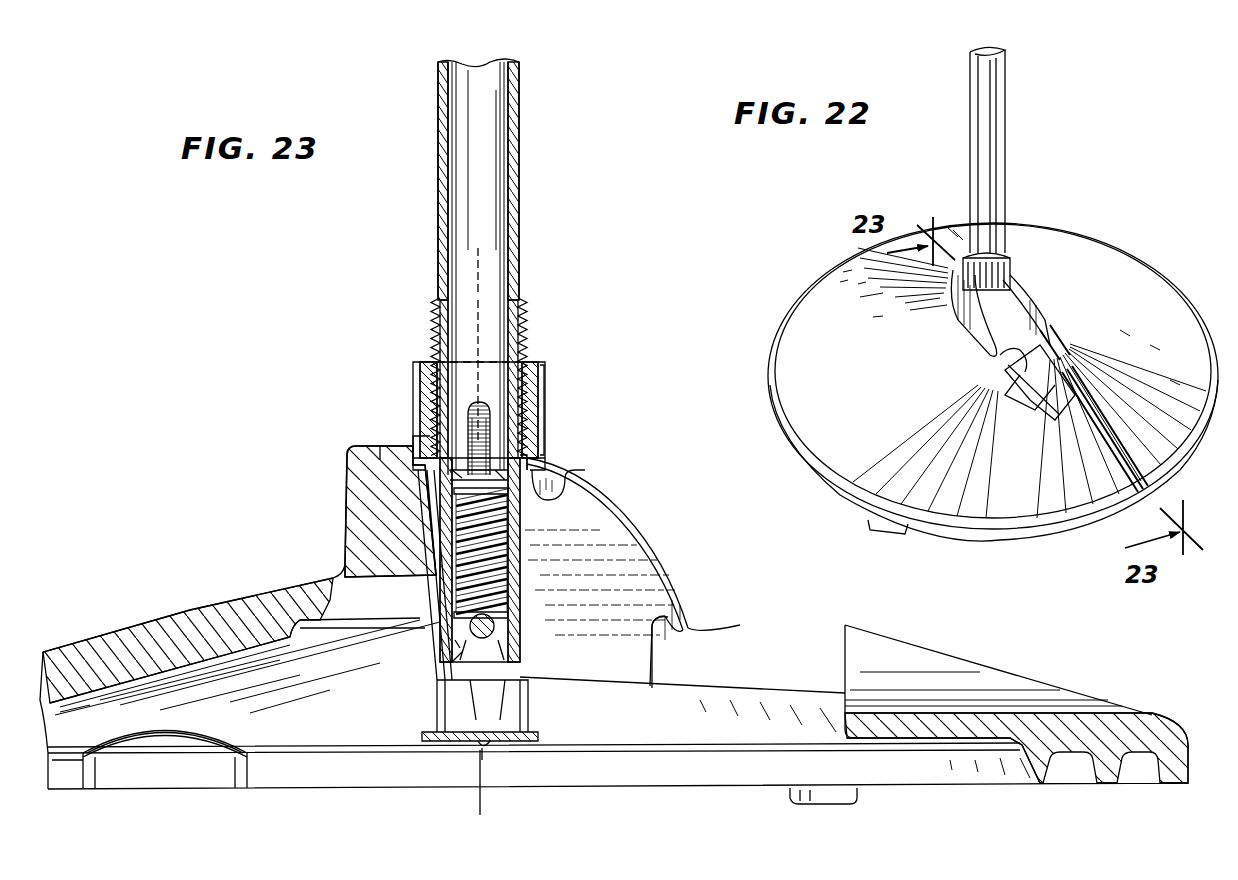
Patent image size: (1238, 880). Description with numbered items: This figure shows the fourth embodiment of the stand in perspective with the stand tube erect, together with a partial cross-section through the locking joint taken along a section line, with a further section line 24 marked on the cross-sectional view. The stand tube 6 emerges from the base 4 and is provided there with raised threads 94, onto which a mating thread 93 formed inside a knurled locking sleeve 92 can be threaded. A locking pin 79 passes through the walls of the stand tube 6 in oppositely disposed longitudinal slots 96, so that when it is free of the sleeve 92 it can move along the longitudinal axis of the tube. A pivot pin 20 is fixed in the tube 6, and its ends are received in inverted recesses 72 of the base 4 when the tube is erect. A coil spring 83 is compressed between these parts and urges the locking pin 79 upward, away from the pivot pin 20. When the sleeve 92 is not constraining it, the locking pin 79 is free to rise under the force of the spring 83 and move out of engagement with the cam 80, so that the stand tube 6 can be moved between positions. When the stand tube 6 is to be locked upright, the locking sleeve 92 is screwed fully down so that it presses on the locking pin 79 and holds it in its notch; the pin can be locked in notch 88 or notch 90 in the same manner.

In FIG. 23, the base 4 is at (232, 612).
In FIG. 22, the base 4 is at (832, 462).
In FIG. 23, the stand tube 6 is at (515, 170).
In FIG. 22, the stand tube 6 is at (996, 140).
In FIG. 23, the pivot pin 20 is at (470, 640).
In FIG. 23, the section line 24- 24 is at (476, 275).
In FIG. 23, the inverted recesses 72 is at (470, 702).
In FIG. 23, the locking pin 79 is at (510, 455).
In FIG. 22, the cam 80 is at (1040, 305).
In FIG. 23, the coil spring 83 is at (508, 520).
In FIG. 23, the notch 88 is at (530, 478).
In FIG. 22, the notch 88 is at (1010, 290).
In FIG. 23, the notch 90 is at (682, 632).
In FIG. 22, the notch 90 is at (1050, 337).
In FIG. 23, the knurled locking sleeve 92 is at (556, 402).
In FIG. 22, the knurled locking sleeve 92 is at (1012, 252).
In FIG. 23, the mating thread 93 is at (535, 385).
In FIG. 23, the raised threads 94 is at (528, 312).
In FIG. 23, the longitudinal slots 96 is at (466, 420).